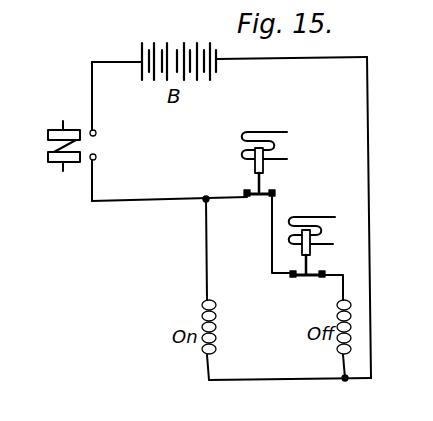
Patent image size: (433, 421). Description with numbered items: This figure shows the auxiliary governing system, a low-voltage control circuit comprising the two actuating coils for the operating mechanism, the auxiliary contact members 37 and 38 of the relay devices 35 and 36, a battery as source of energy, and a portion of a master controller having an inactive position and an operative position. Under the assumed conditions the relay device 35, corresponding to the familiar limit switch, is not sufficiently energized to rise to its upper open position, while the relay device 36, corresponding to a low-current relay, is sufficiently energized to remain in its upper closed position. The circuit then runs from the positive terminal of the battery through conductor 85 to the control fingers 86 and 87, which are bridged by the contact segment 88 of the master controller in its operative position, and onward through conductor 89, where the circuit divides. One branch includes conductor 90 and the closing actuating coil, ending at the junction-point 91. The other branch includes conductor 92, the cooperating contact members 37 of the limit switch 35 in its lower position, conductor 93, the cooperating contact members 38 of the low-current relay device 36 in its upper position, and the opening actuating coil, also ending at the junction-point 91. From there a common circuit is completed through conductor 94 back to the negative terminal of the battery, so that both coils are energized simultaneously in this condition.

The conductor 85 is at (229, 73).
The control finger 86 is at (96, 133).
The control finger 87 is at (96, 157).
The contact segment 88 is at (57, 165).
The conductor 89 is at (173, 200).
The conductor 90 is at (207, 266).
The junction-point 91 is at (345, 381).
The conductor 92 is at (224, 197).
The conductor 93 is at (272, 263).
The conductor 94 is at (371, 352).
The relay device 35 is at (242, 146).
The relay device 36 is at (320, 230).
The auxiliary contact members 37 is at (256, 185).
The auxiliary contact members 38 is at (307, 267).